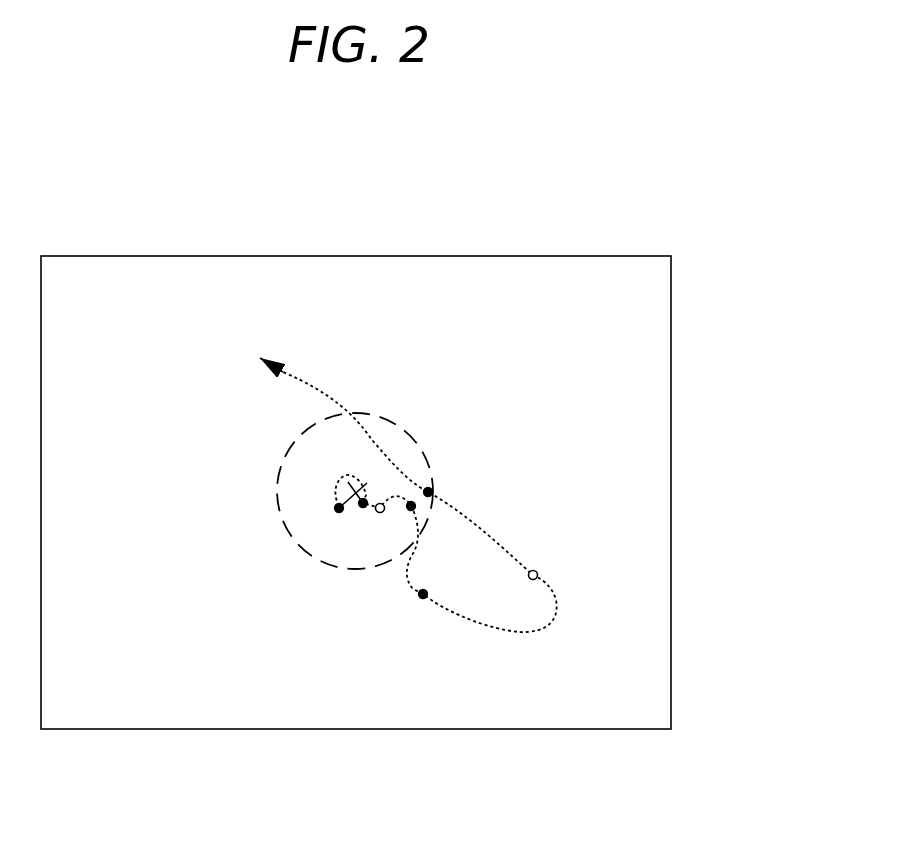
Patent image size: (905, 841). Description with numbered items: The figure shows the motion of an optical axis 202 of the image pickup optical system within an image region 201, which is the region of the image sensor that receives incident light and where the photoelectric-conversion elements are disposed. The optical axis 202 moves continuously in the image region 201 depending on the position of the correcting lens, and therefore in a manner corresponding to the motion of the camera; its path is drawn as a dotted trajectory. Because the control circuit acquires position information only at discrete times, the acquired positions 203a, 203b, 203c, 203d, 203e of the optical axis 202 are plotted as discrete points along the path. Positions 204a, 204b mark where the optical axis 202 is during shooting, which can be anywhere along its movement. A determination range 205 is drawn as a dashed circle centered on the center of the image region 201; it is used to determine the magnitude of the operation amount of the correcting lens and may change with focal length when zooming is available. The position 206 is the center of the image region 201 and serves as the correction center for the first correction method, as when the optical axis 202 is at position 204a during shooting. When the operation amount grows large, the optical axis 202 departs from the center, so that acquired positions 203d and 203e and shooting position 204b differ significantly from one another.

The image region 201 is at (623, 295).
The optical axis 202 is at (502, 538).
The position of the optical axis 203a is at (337, 513).
The position of the optical axis 203b is at (361, 510).
The position of the optical axis 203c is at (410, 512).
The position of the optical axis 203d is at (430, 498).
The position of the optical axis 203e is at (425, 600).
The position of the optical axis during shooting 204a is at (379, 514).
The position of the optical axis during shooting 204b is at (540, 577).
The determination range 205 is at (422, 443).
The center of the image region 206 is at (363, 491).